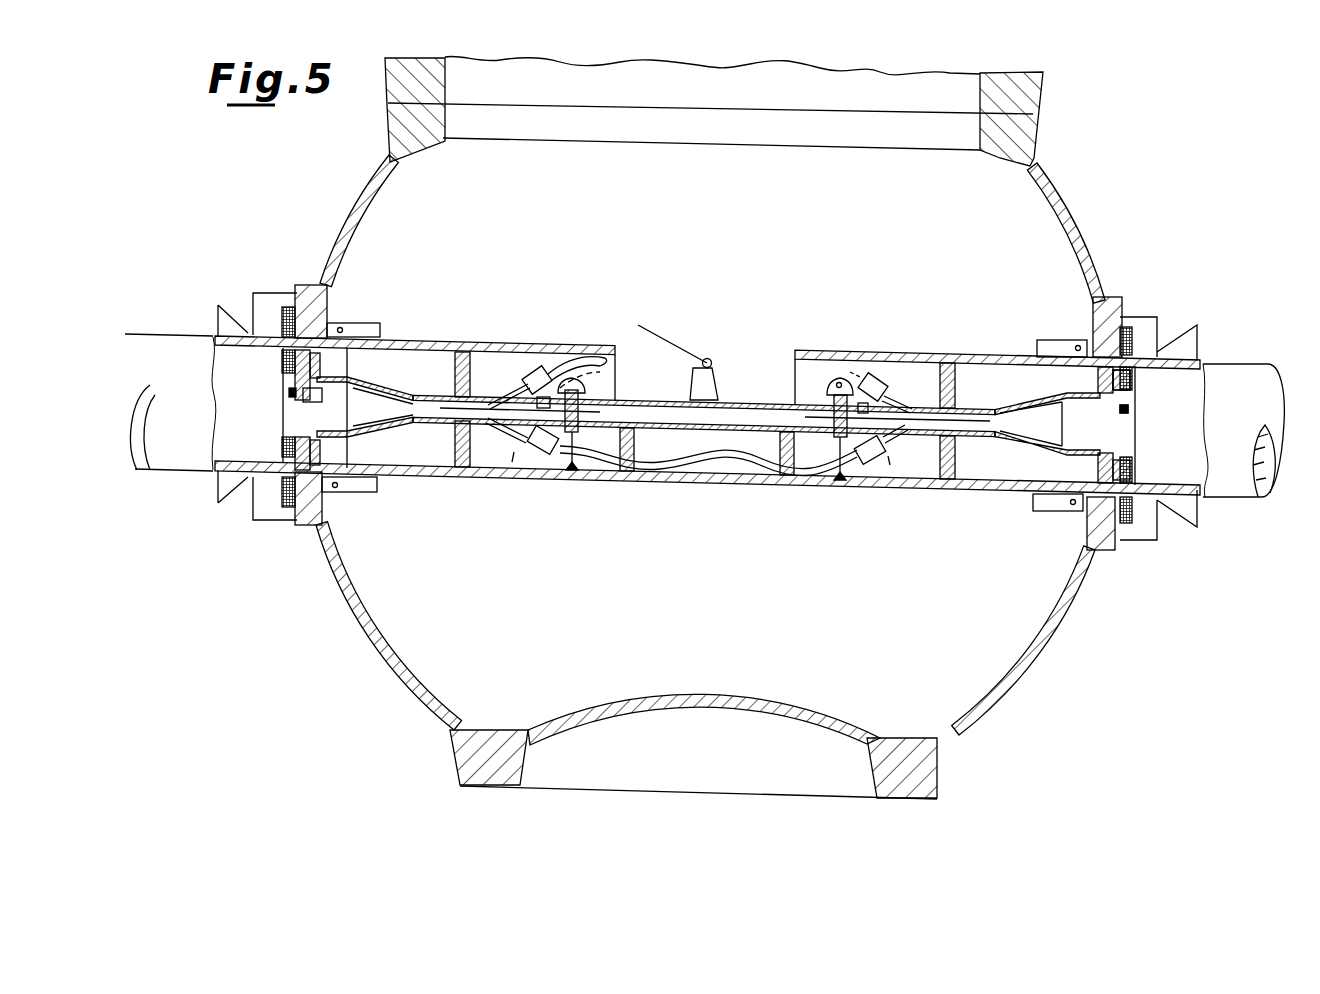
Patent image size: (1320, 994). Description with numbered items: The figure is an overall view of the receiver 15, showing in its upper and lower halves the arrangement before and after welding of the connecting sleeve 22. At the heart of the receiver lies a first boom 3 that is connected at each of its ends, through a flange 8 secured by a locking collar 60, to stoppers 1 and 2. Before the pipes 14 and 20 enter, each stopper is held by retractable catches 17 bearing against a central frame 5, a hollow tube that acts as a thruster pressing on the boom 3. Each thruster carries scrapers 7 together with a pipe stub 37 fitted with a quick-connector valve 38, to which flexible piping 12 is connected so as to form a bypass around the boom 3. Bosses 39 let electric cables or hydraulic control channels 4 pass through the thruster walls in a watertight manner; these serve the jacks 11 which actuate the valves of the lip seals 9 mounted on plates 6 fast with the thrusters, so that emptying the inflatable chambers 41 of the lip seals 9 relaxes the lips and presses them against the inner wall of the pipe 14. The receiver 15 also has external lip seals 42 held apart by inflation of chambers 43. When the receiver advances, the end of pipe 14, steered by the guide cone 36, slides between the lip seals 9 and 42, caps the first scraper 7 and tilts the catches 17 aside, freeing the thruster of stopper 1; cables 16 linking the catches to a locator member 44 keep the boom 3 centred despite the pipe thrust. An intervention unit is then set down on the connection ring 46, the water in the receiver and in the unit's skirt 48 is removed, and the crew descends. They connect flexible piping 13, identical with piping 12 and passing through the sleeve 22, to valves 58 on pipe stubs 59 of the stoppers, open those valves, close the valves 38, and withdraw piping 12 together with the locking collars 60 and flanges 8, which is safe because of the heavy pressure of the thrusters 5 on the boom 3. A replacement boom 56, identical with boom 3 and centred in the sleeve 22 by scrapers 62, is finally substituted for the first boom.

The stopper 1 is at (433, 430).
The stopper 2 is at (987, 447).
The first boom 3 is at (745, 400).
The electric cables or hydraulic control channels 4 is at (988, 408).
The central frame 5 is at (388, 372).
The plate 6 is at (280, 375).
The scraper 7 is at (470, 476).
The flange 8 is at (574, 436).
The lip seal 9 is at (220, 355).
The jack 11 is at (320, 400).
The flexible piping 12 is at (581, 352).
The flexible piping 13 is at (695, 464).
The pipe 14 is at (172, 472).
The receiver 15 is at (1075, 222).
The cable 16 is at (675, 342).
The retractable catch 17 is at (372, 322).
The pipe 20 is at (1238, 488).
The sleeve 22 is at (728, 487).
The guide cone 36 is at (228, 505).
The pipe stub 37 is at (518, 385).
The quick-connector valve 38 is at (535, 370).
The boss 39 is at (878, 402).
The inflatable chamber 41 is at (1222, 370).
The external lip seal 42 is at (1143, 347).
The chamber 43 is at (1150, 348).
The locator member 44 is at (718, 380).
The connection ring 46 is at (1035, 97).
The skirt 48 is at (1035, 82).
The replacement boom 56 is at (688, 458).
The valve 58 is at (538, 455).
The pipe stub 59 is at (512, 462).
The locking collar 60 is at (583, 387).
The scraper 62 is at (637, 481).